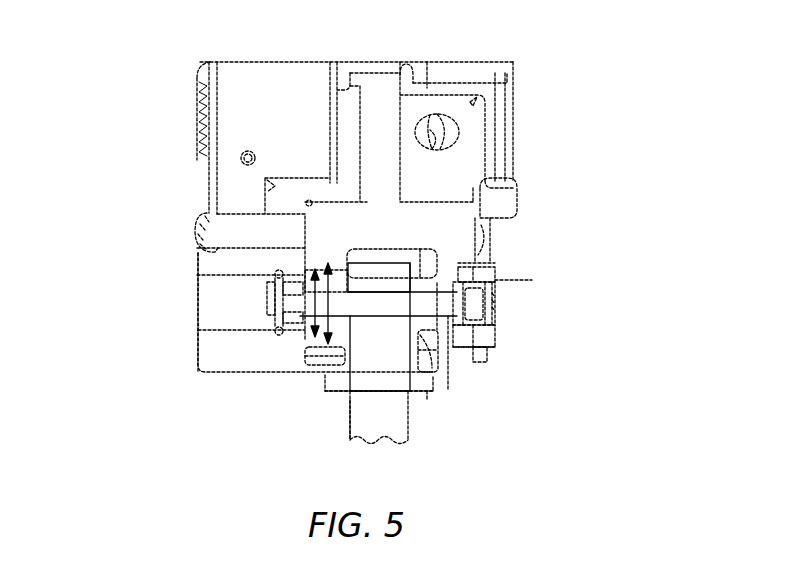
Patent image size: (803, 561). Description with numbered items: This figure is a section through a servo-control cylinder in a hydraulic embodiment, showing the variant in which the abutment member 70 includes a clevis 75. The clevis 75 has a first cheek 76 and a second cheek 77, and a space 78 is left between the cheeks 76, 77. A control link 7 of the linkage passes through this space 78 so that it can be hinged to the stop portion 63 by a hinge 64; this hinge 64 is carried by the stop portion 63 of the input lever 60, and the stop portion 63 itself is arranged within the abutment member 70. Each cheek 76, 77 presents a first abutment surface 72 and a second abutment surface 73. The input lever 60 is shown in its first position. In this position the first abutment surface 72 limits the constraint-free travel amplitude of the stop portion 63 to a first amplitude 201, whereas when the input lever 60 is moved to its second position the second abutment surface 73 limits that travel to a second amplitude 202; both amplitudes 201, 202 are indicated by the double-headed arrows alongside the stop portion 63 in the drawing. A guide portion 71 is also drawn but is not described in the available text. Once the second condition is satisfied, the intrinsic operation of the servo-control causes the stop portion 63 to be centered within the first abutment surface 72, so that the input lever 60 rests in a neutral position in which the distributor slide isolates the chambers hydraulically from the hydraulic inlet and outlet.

The clevis 75 is at (458, 215).
The support pillar 71 is at (463, 247).
The hinge 64 is at (410, 268).
The stop portion 63 is at (348, 268).
The input lever 60 is at (495, 301).
The second amplitude 202 is at (330, 286).
The first amplitude 201 is at (309, 303).
The first abutment surface 72 is at (312, 349).
The abutment member 70 is at (318, 358).
The first cheek 76 is at (320, 350).
The second abutment surface 73 is at (328, 345).
The control link 7 is at (347, 433).
The space 78 is at (427, 392).
The second cheek 77 is at (455, 353).